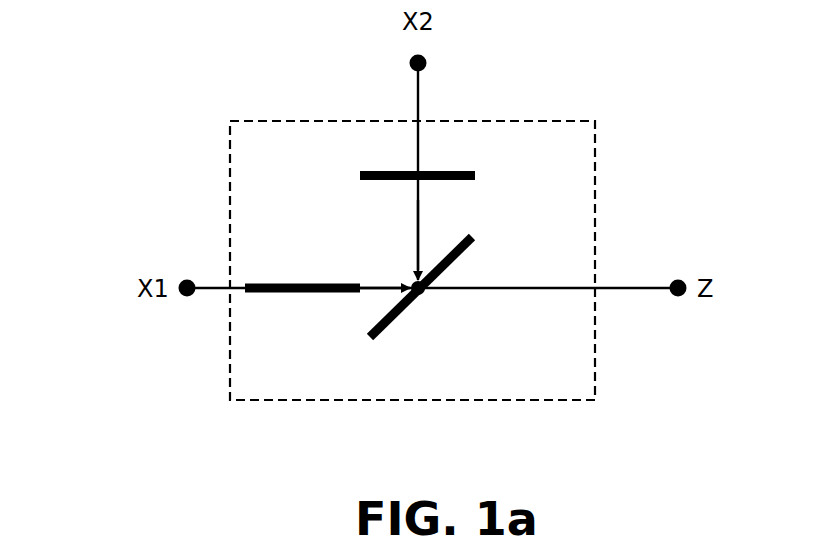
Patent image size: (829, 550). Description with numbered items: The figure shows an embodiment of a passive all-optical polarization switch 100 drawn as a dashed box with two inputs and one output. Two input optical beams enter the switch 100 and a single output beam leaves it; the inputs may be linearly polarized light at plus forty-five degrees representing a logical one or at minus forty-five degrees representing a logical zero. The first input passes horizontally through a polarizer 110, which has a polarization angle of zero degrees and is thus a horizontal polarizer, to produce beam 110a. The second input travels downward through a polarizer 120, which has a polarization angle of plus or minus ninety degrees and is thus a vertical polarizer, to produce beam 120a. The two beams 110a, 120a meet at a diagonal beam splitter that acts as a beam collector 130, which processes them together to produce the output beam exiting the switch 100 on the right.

The passive all-optical polarization switch 100 is at (136, 72).
The polarizer 110 is at (345, 294).
The beam 110a is at (376, 280).
The polarizer 120 is at (456, 170).
The beam 120a is at (424, 217).
The beam collector 130 is at (453, 277).